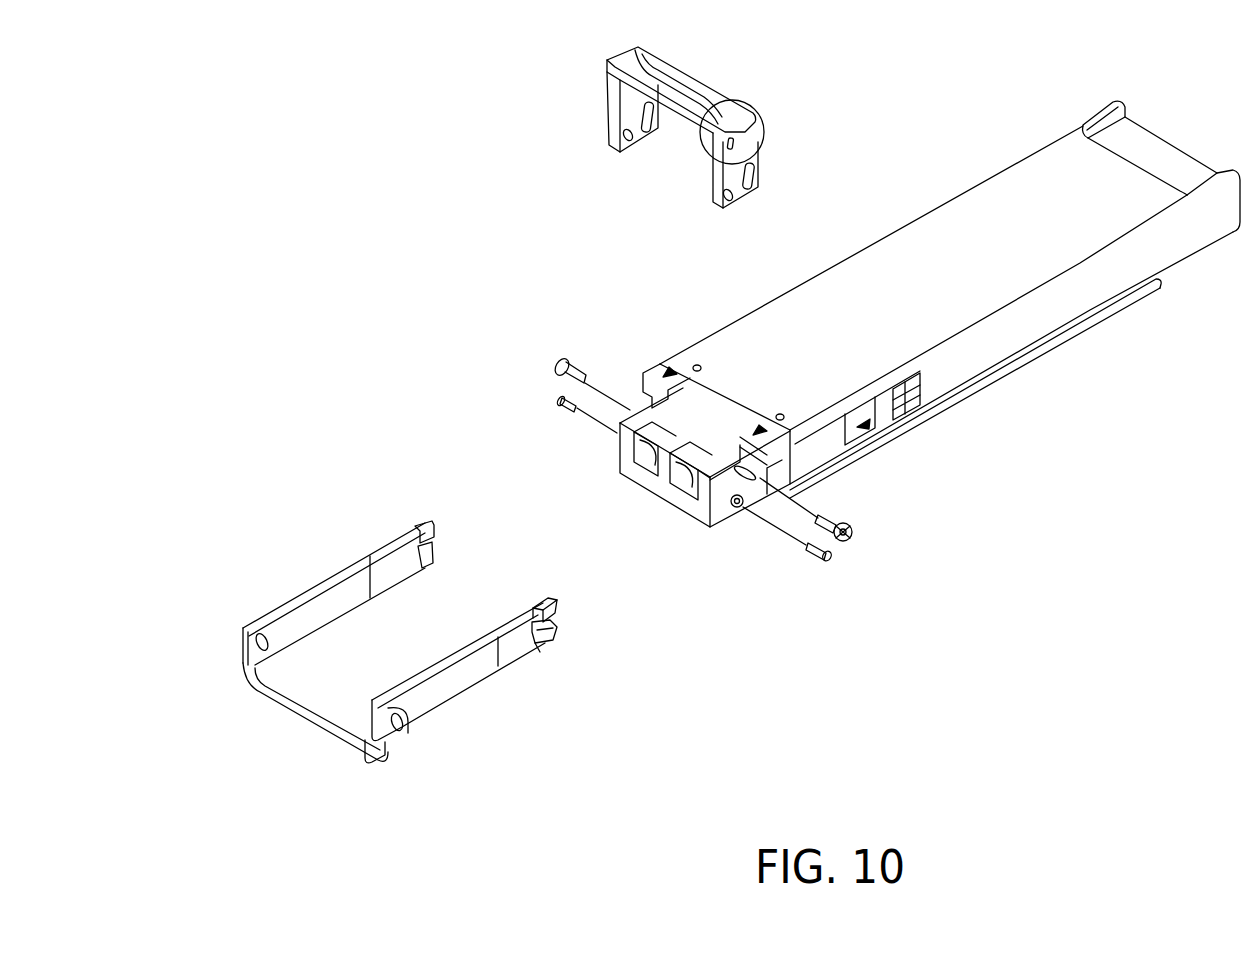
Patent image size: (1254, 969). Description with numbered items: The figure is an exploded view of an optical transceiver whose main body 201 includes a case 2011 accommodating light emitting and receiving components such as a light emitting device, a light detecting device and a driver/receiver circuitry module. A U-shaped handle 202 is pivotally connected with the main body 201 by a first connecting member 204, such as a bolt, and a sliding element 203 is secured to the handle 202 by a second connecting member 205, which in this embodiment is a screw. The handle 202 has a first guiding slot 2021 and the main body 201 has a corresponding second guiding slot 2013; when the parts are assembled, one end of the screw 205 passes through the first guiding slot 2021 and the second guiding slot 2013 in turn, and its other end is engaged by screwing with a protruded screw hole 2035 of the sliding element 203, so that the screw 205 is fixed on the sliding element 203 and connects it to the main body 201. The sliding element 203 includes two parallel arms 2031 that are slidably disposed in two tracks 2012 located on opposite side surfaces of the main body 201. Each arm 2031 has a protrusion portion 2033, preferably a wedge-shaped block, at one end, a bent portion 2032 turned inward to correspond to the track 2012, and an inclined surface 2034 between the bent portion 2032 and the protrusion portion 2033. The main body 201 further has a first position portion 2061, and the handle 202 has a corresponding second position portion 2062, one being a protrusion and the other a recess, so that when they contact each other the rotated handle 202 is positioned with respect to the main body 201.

The main body 201 is at (941, 282).
The case 2011 is at (1068, 155).
The track 2012 is at (900, 427).
The second guiding slot 2013 is at (760, 473).
The handle 202 is at (660, 136).
The first guiding slot 2021 is at (753, 173).
The second position portion 2062 is at (752, 136).
The first position portion 2061 is at (687, 503).
The sliding element 203 is at (466, 680).
The arm 2031 is at (445, 687).
The bent portion 2032 is at (527, 643).
The protrusion portion 2033 is at (545, 637).
The inclined surface 2034 is at (537, 643).
The protruded screw hole 2035 is at (407, 725).
The first connecting member 204 is at (558, 401).
The second connecting member 205 is at (553, 360).